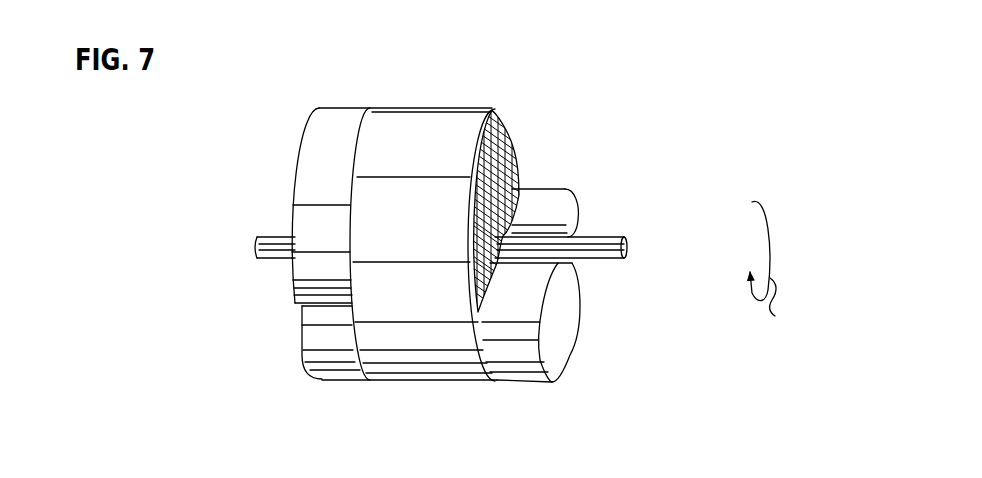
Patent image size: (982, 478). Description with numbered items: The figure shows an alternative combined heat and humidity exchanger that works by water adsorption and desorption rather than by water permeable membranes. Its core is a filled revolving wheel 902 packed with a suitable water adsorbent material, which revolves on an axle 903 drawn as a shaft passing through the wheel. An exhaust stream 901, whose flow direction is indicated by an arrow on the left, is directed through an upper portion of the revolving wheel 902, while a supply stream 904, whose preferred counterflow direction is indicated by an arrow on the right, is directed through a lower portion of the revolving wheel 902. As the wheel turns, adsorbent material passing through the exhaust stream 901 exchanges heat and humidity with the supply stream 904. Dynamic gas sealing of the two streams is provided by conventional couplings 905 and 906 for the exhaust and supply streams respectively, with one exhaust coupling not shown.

The exhaust stream 901 is at (230, 183).
The filled revolving wheel 902 is at (457, 105).
The axle 903 is at (252, 259).
The supply stream 904 is at (622, 325).
The coupling 905 is at (307, 112).
The coupling 906 is at (343, 390).